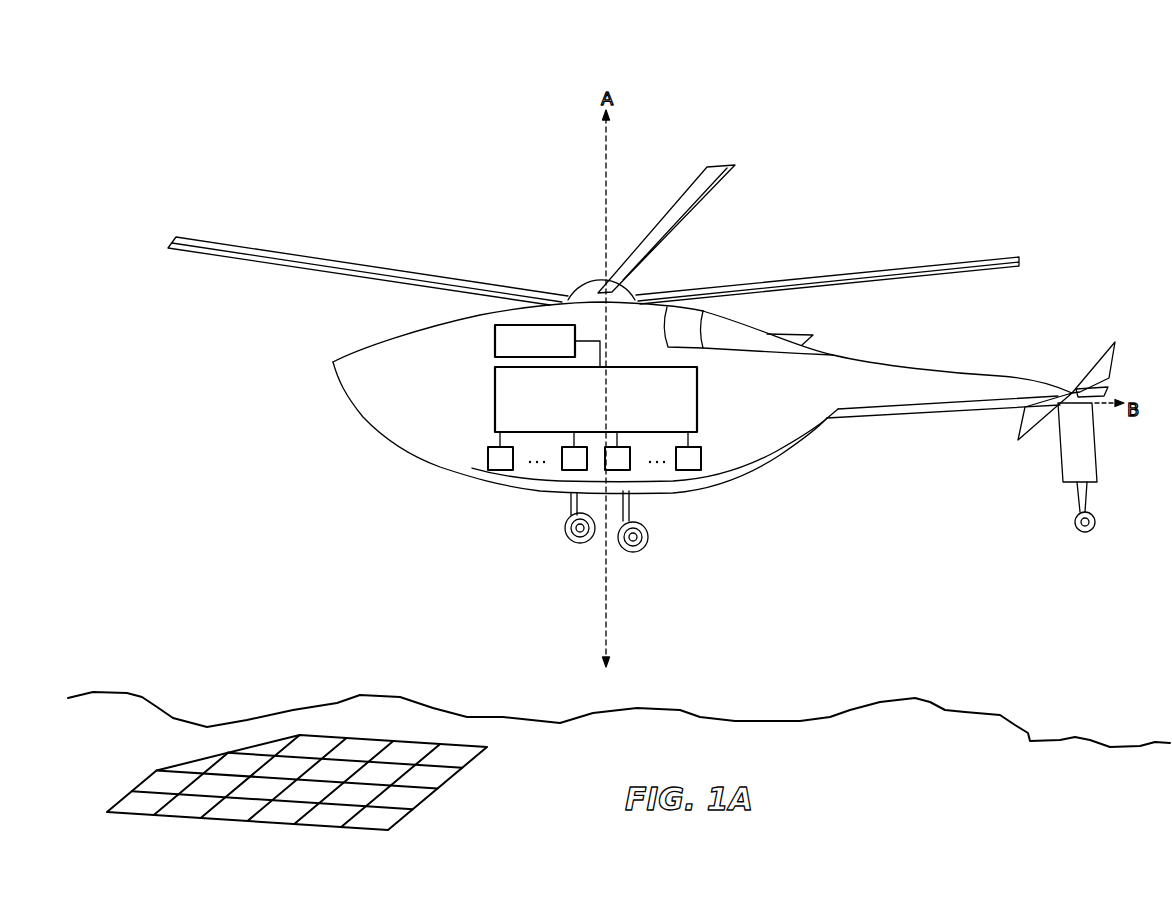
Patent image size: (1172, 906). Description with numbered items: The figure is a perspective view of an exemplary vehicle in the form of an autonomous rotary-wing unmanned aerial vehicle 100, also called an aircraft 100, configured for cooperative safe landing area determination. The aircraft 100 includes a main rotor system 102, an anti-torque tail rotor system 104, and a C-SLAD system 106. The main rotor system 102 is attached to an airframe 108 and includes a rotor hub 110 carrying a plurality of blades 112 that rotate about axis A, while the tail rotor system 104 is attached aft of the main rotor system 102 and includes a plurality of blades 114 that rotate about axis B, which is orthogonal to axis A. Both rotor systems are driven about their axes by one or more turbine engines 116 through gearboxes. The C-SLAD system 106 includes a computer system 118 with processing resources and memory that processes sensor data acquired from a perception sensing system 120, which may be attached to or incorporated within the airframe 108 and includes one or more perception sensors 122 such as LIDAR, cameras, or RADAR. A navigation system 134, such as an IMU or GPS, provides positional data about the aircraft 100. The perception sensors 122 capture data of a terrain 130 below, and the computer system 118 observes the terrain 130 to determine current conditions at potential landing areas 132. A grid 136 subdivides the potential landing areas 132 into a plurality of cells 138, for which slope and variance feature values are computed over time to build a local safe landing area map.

The autonomous rotary-wing unmanned aerial vehicle 100 is at (653, 288).
The main rotor system 102 is at (653, 358).
The tail rotor system 104 is at (1067, 411).
The C-SLAD system 106 is at (478, 379).
The airframe 108 is at (857, 404).
The rotor hub 110 is at (578, 291).
The blades 112 is at (868, 270).
The blades 114 is at (1018, 441).
The turbine engines 116 is at (682, 340).
The computer system 118 is at (581, 410).
The perception sensing system 120 is at (464, 435).
The perception sensors 122 is at (459, 465).
The terrain 130 is at (902, 749).
The potential landing areas 132 is at (316, 730).
The navigation system 134 is at (520, 354).
The grid 136 is at (448, 778).
The cells 138 is at (316, 725).